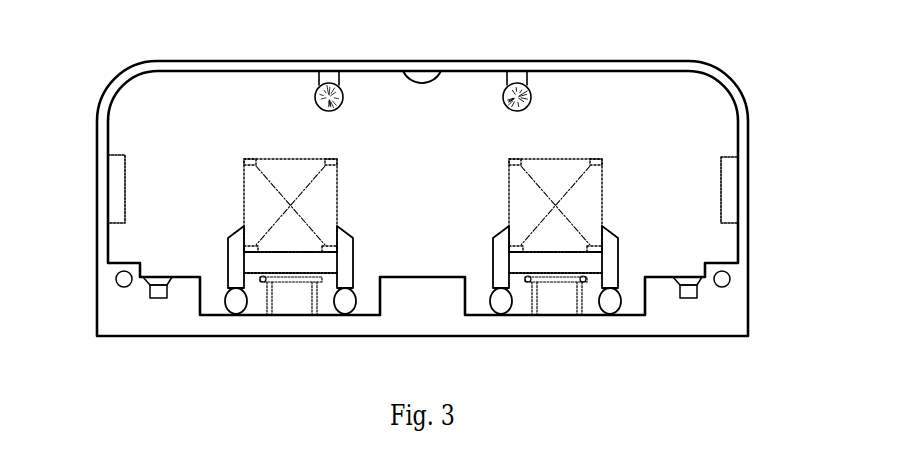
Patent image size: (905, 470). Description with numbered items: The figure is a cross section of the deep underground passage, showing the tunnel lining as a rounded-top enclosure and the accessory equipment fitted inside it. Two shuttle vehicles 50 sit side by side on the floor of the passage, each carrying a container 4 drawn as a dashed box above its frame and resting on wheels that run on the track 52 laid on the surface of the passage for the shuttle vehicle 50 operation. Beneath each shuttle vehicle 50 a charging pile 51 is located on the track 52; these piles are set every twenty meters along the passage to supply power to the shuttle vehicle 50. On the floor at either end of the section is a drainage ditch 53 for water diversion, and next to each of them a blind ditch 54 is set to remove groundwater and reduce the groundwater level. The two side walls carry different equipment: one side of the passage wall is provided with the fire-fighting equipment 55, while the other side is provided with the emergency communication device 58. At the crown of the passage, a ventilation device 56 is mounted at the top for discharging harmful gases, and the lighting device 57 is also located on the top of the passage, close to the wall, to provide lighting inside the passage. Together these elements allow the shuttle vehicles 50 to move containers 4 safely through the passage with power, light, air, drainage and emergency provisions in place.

The container 4 is at (601, 183).
The shuttle vehicle 50 is at (351, 236).
The charging pile 51 is at (318, 317).
The track 52 is at (343, 315).
The drainage ditch 53 is at (157, 293).
The blind ditch 54 is at (120, 286).
The fire-fighting equipment 55 is at (112, 180).
The ventilation device 56 is at (331, 89).
The lighting device 57 is at (424, 76).
The emergency communication device 58 is at (730, 178).